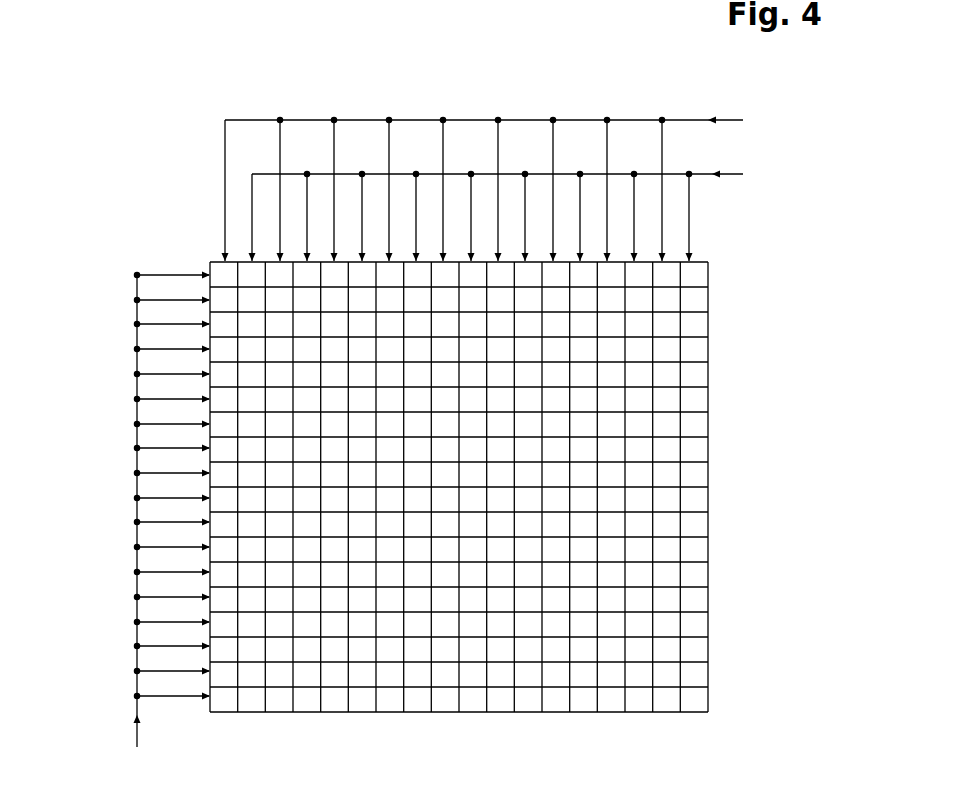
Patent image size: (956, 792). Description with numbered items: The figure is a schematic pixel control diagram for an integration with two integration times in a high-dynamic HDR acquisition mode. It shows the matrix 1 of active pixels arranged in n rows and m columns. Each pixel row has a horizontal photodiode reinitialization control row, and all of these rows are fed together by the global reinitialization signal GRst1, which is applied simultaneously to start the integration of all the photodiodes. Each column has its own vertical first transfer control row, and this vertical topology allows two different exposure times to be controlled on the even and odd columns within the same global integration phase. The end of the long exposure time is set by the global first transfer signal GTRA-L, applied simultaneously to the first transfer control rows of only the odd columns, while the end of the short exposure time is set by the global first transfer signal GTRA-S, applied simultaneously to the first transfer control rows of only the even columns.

The matrix 1 is at (709, 711).
The global first transfer signal GTRA-L is at (524, 120).
The global first transfer signal GTRA-S is at (537, 174).
The global reinitialization signal GRst1 is at (136, 522).